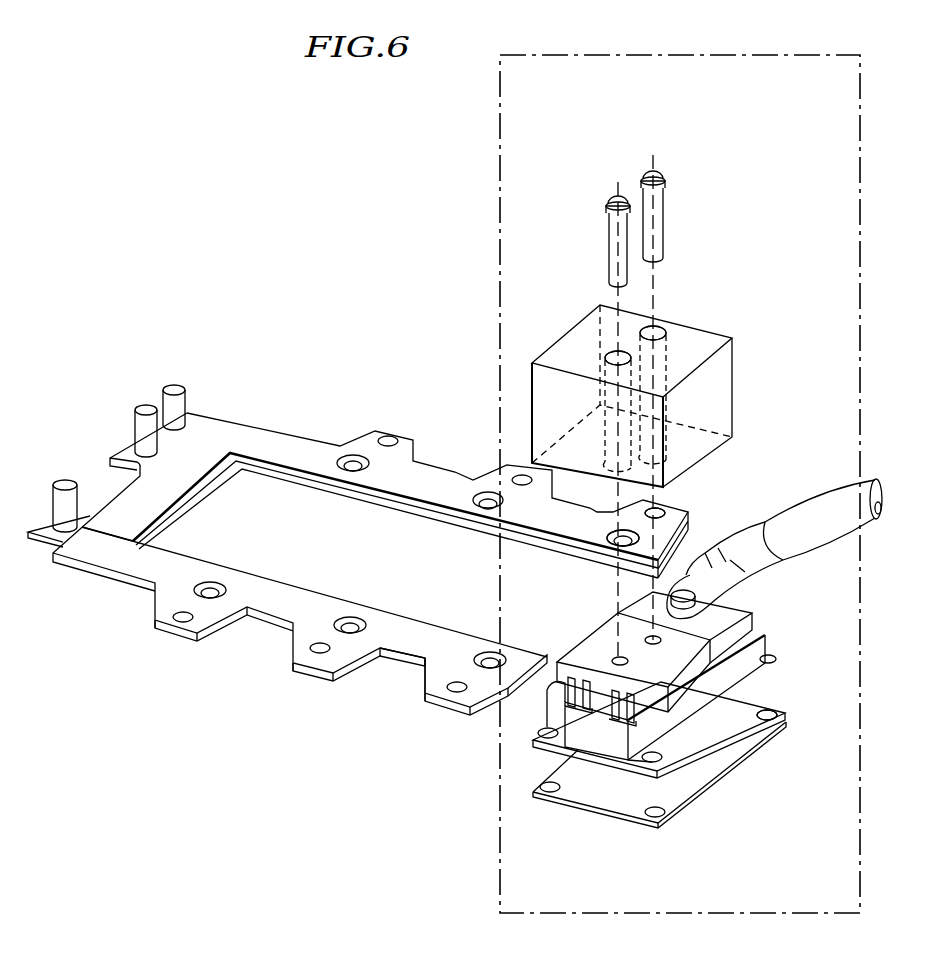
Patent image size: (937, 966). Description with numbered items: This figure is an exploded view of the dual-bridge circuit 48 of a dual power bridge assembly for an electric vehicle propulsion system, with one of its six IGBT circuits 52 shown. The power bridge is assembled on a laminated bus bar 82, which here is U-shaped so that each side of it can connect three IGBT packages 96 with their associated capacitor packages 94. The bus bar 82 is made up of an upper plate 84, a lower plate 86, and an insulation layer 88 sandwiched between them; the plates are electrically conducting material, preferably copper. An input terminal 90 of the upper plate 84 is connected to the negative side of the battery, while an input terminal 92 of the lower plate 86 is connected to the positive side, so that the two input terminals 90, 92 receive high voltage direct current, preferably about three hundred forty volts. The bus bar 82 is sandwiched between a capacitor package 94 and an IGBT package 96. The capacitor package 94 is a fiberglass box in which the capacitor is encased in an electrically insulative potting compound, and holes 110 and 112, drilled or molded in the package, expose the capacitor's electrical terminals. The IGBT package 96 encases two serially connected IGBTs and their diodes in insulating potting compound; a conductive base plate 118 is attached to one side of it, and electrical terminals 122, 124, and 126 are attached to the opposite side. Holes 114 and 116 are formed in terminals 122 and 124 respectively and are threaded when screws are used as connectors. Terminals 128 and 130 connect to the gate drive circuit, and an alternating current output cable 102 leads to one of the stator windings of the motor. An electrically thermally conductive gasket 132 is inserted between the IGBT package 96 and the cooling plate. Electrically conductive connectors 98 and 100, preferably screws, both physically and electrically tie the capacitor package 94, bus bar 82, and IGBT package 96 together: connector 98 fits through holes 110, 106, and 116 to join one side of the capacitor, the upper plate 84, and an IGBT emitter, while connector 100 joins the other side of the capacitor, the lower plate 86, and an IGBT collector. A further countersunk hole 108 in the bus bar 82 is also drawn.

The dual-bridge circuit 48 is at (288, 350).
The IGBT circuit 52 is at (516, 891).
The laminated bus bar 82 is at (108, 622).
The upper plate 84 is at (215, 615).
The lower plate 86 is at (437, 512).
The insulation layer 88 is at (402, 655).
The input terminal 90 is at (168, 388).
The input terminal 92 is at (52, 496).
The capacitor package 94 is at (725, 373).
The IGBT package 96 is at (647, 716).
The connector 98 is at (662, 215).
The connector 100 is at (607, 240).
The alternating current output cable 102 is at (826, 500).
The hole 106 is at (675, 506).
The countersunk hole 108 is at (603, 540).
The hole 110 is at (661, 326).
The hole 112 is at (607, 352).
The hole 114 is at (617, 658).
The hole 116 is at (651, 637).
The conductive base plate 118 is at (783, 666).
The electrical terminal 122 is at (685, 688).
The electrical terminal 124 is at (702, 655).
The electrical terminal 126 is at (778, 720).
The terminal 128 is at (557, 700).
The terminal 130 is at (625, 710).
The electrically thermally conductive gasket 132 is at (608, 797).